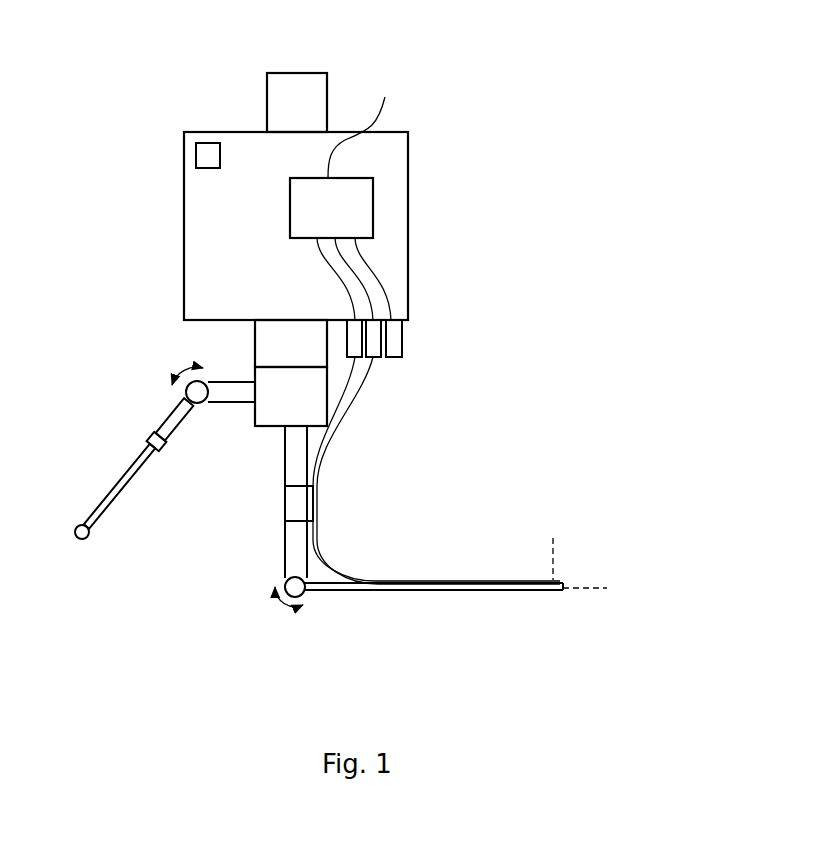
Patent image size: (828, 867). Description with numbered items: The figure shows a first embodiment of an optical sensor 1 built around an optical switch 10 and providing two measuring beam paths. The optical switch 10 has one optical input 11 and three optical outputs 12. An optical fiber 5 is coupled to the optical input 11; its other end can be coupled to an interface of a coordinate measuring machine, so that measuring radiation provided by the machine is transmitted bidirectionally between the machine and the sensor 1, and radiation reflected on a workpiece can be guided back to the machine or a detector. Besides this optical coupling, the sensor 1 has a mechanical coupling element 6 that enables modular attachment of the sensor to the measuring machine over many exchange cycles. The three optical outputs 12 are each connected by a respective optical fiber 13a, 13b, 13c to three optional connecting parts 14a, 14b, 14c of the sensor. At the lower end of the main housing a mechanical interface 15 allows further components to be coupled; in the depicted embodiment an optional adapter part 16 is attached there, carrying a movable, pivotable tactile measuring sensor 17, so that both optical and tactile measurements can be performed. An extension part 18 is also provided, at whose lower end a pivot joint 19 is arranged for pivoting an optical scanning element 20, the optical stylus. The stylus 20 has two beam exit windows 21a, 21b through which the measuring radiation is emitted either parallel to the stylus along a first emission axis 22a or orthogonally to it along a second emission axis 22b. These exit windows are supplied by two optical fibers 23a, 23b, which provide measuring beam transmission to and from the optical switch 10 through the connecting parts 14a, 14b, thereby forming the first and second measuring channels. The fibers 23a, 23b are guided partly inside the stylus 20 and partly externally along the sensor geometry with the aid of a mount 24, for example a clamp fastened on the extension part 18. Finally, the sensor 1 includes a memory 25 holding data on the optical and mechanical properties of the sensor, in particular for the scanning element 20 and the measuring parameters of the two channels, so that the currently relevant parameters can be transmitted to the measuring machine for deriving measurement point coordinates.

The optical sensor 1 is at (307, 164).
The optical fiber 5 is at (395, 124).
The mechanical coupling element 6 is at (282, 80).
The optical switch 10 is at (401, 181).
The optical input 11 is at (222, 122).
The optical outputs 12 is at (295, 259).
The optical fiber 13a is at (221, 259).
The optical fiber 13b is at (231, 279).
The optical fiber 13c is at (240, 279).
The connecting part 14a is at (434, 382).
The connecting part 14b is at (453, 358).
The connecting part 14c is at (461, 335).
The mechanical interface 15 is at (209, 343).
The adapter part 16 is at (262, 421).
The tactile measuring sensor 17 is at (155, 453).
The extension part 18 is at (258, 502).
The pivot joint 19 is at (257, 597).
The optical scanning element 20 is at (434, 609).
The beam exit window 21a is at (615, 613).
The beam exit window 21b is at (614, 538).
The first emission axis 22a is at (629, 569).
The second emission axis 22b is at (505, 558).
The optical fiber 23a is at (436, 469).
The optical fiber 23b is at (438, 470).
The mount 24 is at (260, 508).
The memory 25 is at (162, 146).